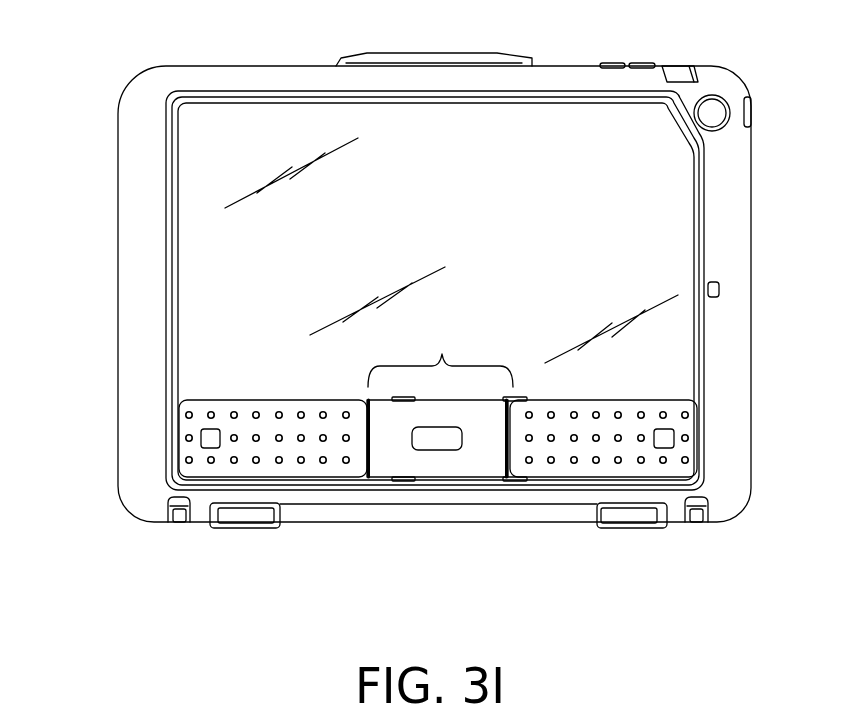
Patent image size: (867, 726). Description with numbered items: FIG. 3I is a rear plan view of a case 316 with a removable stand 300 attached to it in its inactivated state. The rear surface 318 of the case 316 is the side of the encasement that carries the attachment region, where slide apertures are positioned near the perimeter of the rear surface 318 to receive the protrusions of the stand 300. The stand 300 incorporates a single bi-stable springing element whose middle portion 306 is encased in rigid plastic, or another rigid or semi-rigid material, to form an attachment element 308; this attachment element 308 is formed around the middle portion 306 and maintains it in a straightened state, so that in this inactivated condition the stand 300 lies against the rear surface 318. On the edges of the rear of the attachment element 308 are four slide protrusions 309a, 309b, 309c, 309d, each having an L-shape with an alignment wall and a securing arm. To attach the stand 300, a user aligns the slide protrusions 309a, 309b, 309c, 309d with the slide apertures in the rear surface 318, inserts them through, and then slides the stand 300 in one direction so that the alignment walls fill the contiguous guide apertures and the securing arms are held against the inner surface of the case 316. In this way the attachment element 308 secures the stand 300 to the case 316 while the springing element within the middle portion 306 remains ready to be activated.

The case 316 is at (100, 148).
The rear surface 318 is at (212, 290).
The middle portion 306 is at (442, 353).
The attachment element 308 is at (478, 453).
The slide protrusion 309a is at (515, 481).
The slide protrusion 309b is at (404, 481).
The slide protrusion 309c is at (401, 401).
The slide protrusion 309d is at (520, 397).
The removable stand 300 is at (297, 477).